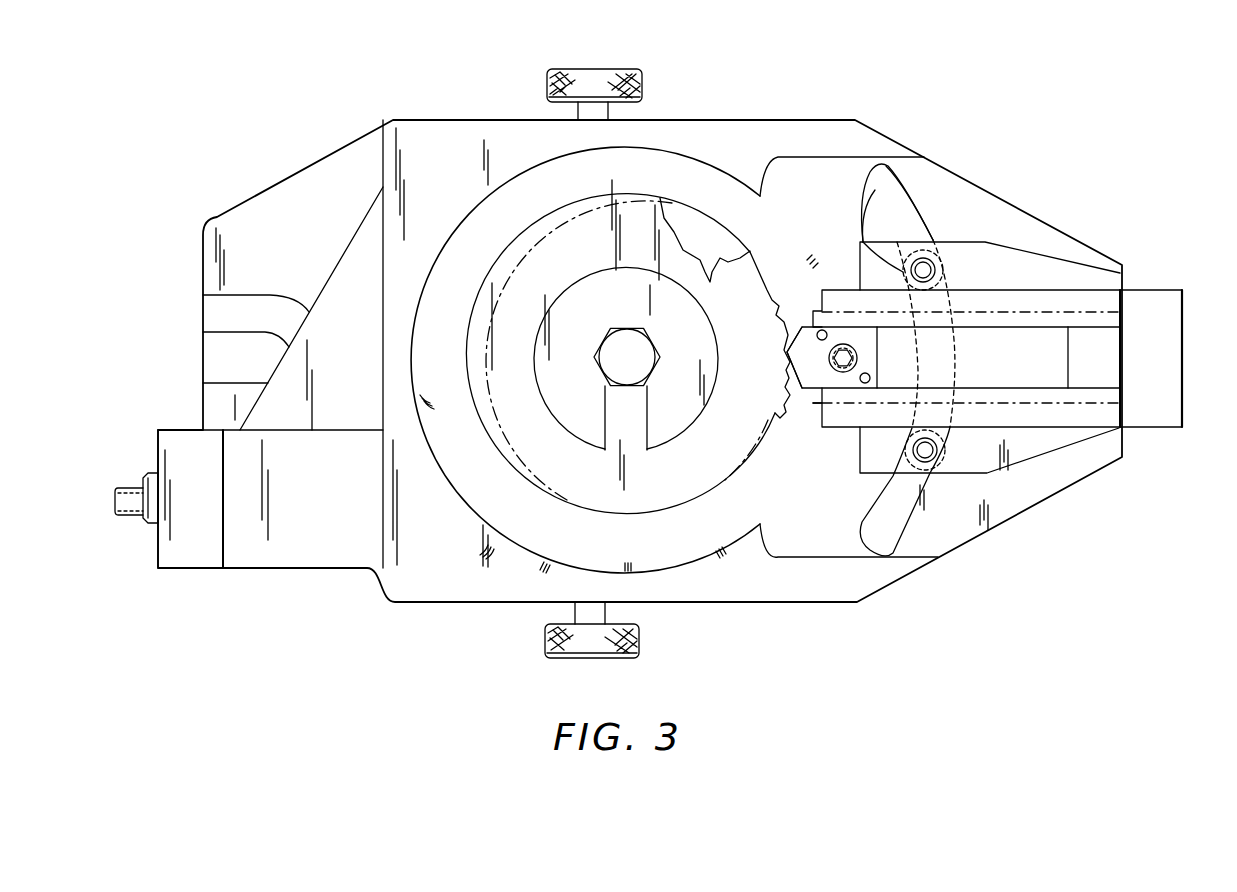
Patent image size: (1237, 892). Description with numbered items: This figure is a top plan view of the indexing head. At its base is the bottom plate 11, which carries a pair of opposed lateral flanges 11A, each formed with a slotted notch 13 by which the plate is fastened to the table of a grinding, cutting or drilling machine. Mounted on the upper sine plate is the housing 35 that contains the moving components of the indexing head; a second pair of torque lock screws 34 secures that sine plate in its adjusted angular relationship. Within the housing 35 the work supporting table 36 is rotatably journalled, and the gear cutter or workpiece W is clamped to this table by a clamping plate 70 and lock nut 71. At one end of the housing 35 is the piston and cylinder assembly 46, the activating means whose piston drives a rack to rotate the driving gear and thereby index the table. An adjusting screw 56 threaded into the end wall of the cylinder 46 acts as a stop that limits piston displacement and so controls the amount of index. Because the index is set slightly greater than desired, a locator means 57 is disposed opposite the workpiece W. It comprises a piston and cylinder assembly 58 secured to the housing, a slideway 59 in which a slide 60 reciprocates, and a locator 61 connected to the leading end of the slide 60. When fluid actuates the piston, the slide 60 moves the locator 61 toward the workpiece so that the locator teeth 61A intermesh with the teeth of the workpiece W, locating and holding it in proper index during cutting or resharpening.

The base plate 11 is at (337, 152).
The lateral flanges 11A is at (210, 272).
The slotted notch 13 is at (220, 337).
The torque lock screws 34 is at (623, 82).
The housing 35 is at (705, 125).
The work supporting table 36 is at (723, 236).
The piston and cylinder assembly 46 is at (287, 560).
The adjusting screw 56 is at (125, 517).
The locator means 57 is at (1032, 237).
The piston and cylinder assembly 58 is at (1173, 370).
The slideway 59 is at (1108, 300).
The slide 60 is at (1052, 360).
The locator 61 is at (813, 377).
The locator teeth 61A is at (786, 348).
The clamping plate 70 is at (707, 378).
The lock nut 71 is at (647, 343).
The workpiece W is at (775, 413).